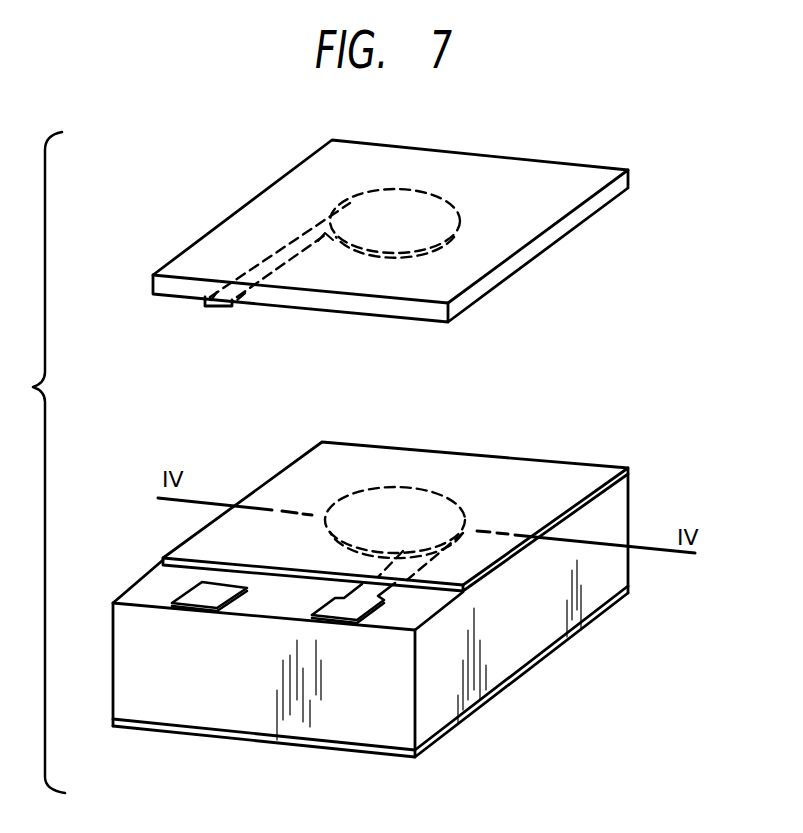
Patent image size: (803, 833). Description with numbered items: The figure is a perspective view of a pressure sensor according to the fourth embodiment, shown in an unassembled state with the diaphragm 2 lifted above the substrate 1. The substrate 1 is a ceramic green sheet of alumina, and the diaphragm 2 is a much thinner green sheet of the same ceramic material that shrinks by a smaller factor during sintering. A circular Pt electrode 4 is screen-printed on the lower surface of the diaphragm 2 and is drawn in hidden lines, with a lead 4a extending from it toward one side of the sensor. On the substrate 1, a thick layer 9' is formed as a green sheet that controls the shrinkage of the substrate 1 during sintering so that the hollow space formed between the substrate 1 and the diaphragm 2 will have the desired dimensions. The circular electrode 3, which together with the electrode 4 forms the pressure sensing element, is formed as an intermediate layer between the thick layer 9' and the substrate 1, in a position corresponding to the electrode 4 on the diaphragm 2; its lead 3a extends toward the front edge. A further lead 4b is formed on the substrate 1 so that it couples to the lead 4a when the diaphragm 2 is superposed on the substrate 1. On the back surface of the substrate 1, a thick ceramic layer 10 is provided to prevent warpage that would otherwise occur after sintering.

The substrate 1 is at (497, 682).
The diaphragm 2 is at (502, 280).
The electrode 3 is at (429, 498).
The lead 3a is at (376, 611).
The electrode 4 is at (362, 200).
The lead 4a is at (281, 268).
The lead 4b is at (198, 593).
The thick layer 9' is at (395, 494).
The thick ceramic layer 10 is at (553, 650).